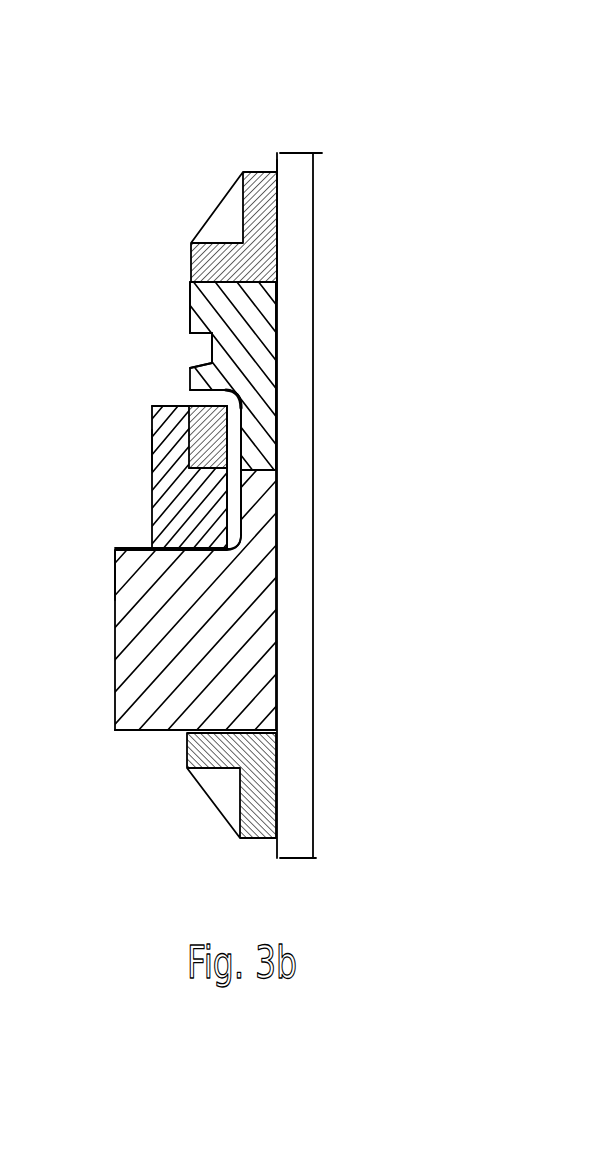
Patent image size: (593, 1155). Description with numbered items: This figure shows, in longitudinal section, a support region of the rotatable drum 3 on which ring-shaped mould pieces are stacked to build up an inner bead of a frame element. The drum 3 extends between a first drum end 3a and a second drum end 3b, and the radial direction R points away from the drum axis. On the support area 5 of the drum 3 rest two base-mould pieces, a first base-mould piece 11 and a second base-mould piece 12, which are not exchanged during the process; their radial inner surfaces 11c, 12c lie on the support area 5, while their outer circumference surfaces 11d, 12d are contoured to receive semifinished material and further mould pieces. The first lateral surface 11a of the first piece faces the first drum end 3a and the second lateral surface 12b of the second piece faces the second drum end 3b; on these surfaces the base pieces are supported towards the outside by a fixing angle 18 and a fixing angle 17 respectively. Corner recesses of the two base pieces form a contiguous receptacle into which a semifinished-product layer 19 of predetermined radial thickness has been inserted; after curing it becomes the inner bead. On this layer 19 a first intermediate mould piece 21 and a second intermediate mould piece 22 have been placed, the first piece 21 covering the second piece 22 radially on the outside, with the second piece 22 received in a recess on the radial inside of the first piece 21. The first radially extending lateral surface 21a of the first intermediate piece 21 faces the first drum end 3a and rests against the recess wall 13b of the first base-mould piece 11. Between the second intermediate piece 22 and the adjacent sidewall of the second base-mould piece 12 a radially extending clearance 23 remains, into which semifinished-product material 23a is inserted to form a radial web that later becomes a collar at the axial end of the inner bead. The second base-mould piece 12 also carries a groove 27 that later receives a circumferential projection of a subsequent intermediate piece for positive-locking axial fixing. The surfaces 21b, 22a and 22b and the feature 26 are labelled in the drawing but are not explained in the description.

The rotatable drum 3 is at (307, 292).
The first drum end 3a is at (341, 823).
The second drum end 3b is at (335, 155).
The radial direction R is at (382, 212).
The support area 5 is at (272, 160).
The first base-mould piece 11 is at (115, 640).
The first lateral surface of first base-mould piece 11a is at (148, 733).
The radial inner surface of first base-mould piece 11c is at (17, 519).
The outer circumference surface of first base-mould piece 11d is at (112, 580).
The second base-mould piece 12 is at (187, 327).
The second lateral surface of second base-mould piece 12b is at (248, 275).
The radial inner surface of second base-mould piece 12c is at (283, 380).
The outer circumference surface of second base-mould piece 12d is at (187, 300).
The recess wall of first base-mould piece 13b is at (148, 541).
The fixing angle 17 is at (255, 838).
The fixing angle 18 is at (258, 168).
The semifinished-product layer 19 is at (243, 500).
The first intermediate mould piece 21 is at (170, 539).
The first radially extending lateral surface of first intermediate mould piece 21a is at (195, 553).
The upper face of sealing element 21b is at (167, 400).
The second intermediate mould piece 22 is at (151, 437).
The lower face of insert 22a is at (150, 463).
The upper face of insert 22b is at (151, 416).
The radially extending clearance 23 is at (212, 400).
The semifinished-product material 23a is at (237, 385).
The sealing lip 26 is at (146, 450).
The groove 27 is at (201, 349).